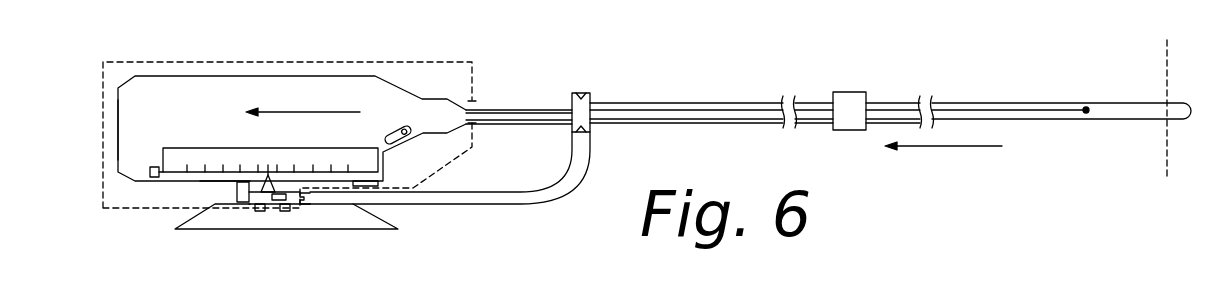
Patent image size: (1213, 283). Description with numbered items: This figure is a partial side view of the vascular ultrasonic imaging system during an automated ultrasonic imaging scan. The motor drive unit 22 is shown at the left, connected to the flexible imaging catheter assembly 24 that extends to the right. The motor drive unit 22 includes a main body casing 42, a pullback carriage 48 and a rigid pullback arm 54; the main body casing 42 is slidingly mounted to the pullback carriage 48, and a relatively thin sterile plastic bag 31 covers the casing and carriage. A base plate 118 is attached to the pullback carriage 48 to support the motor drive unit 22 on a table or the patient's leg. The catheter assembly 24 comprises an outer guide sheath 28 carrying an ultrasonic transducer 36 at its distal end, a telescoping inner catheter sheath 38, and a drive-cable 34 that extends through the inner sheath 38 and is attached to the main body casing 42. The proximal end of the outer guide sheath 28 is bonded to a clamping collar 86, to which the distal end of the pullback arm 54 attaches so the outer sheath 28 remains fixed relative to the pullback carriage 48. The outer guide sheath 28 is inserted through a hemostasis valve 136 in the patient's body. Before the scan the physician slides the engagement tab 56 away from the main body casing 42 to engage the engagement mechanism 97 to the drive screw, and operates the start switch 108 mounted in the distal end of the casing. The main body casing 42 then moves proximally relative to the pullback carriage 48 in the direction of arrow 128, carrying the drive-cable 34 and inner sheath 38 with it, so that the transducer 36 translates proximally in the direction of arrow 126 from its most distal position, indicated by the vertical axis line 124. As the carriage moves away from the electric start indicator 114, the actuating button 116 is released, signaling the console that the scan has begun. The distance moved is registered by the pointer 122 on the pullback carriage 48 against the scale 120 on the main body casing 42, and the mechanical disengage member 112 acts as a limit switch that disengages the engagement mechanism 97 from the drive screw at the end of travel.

The motor drive unit 22 is at (338, 44).
The flexible imaging catheter assembly 24 is at (787, 64).
The outer guide sheath 28 is at (732, 102).
The sterile plastic bag 31 is at (396, 62).
The drive-cable 34 is at (530, 109).
The ultrasonic transducer 36 is at (1088, 107).
The telescoping inner catheter sheath 38 is at (662, 109).
The main body casing 42 is at (218, 87).
The pullback carriage 48 is at (247, 202).
The rigid pullback arm 54 is at (565, 172).
The engagement tab 56 is at (270, 195).
The clamping collar 86 is at (588, 96).
The engagement mechanism 97 is at (245, 190).
The start switch 108 is at (407, 137).
The mechanical disengage member 112 is at (366, 187).
The electric start indicator 114 is at (150, 173).
The actuating button 116 is at (153, 167).
The base plate 118 is at (344, 220).
The scale 120 is at (206, 152).
The pointer 122 is at (293, 195).
The vertical axis line 124 is at (1165, 123).
The arrow 126 is at (943, 148).
The arrow 128 is at (290, 110).
The hemostasis valve 136 is at (846, 92).